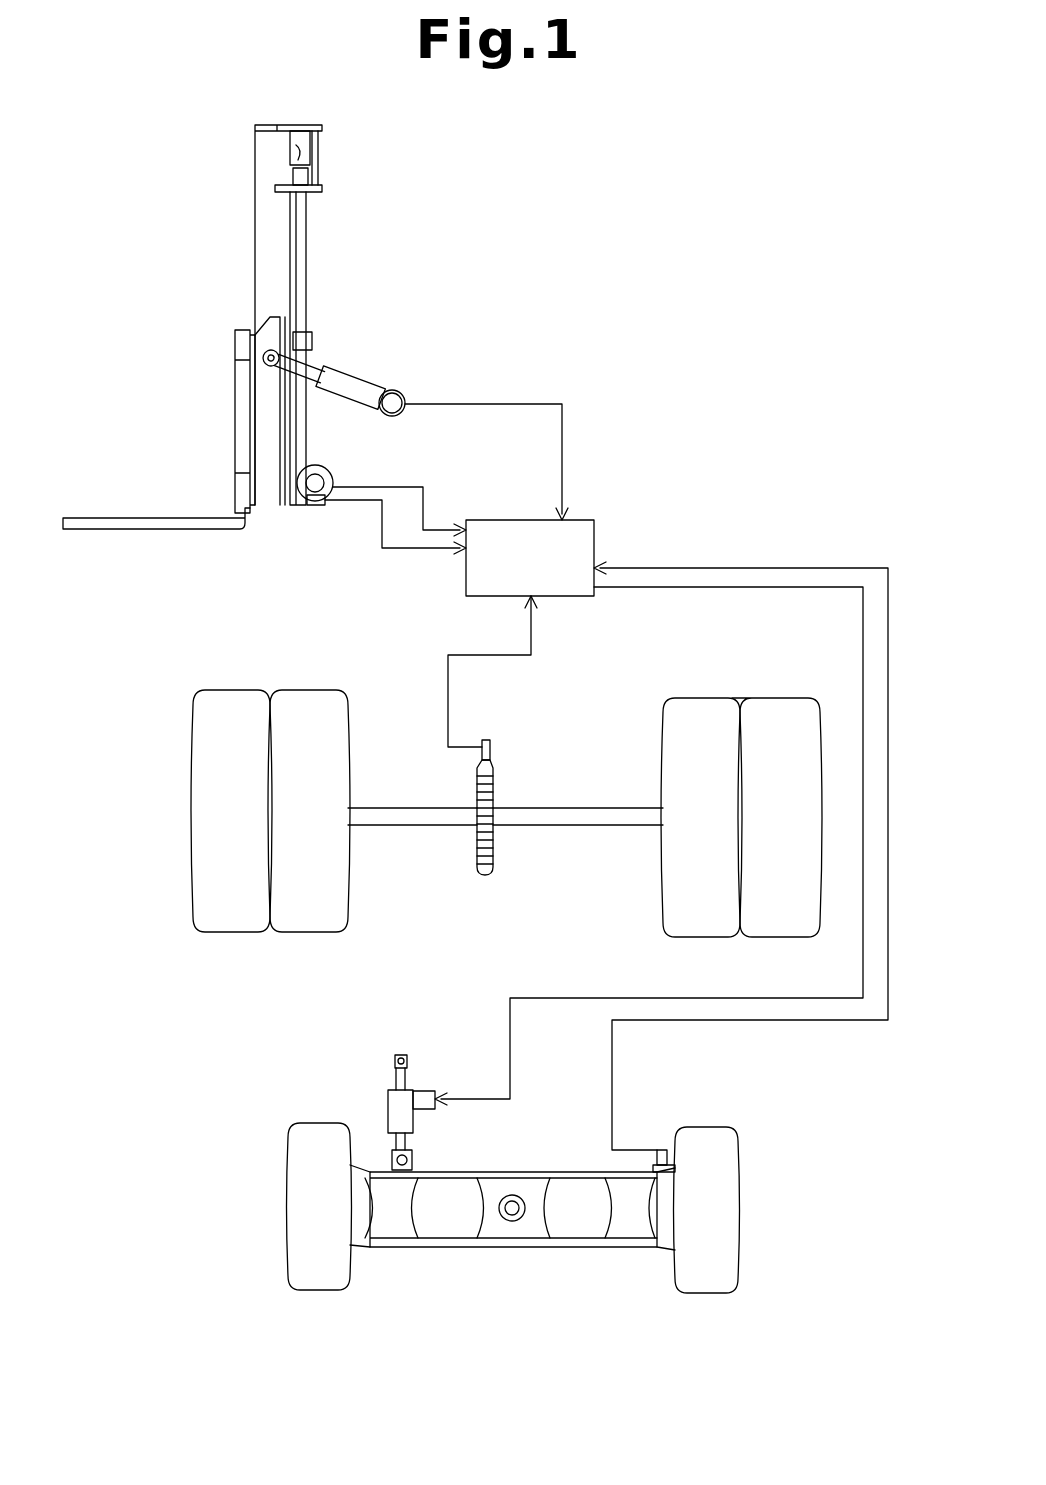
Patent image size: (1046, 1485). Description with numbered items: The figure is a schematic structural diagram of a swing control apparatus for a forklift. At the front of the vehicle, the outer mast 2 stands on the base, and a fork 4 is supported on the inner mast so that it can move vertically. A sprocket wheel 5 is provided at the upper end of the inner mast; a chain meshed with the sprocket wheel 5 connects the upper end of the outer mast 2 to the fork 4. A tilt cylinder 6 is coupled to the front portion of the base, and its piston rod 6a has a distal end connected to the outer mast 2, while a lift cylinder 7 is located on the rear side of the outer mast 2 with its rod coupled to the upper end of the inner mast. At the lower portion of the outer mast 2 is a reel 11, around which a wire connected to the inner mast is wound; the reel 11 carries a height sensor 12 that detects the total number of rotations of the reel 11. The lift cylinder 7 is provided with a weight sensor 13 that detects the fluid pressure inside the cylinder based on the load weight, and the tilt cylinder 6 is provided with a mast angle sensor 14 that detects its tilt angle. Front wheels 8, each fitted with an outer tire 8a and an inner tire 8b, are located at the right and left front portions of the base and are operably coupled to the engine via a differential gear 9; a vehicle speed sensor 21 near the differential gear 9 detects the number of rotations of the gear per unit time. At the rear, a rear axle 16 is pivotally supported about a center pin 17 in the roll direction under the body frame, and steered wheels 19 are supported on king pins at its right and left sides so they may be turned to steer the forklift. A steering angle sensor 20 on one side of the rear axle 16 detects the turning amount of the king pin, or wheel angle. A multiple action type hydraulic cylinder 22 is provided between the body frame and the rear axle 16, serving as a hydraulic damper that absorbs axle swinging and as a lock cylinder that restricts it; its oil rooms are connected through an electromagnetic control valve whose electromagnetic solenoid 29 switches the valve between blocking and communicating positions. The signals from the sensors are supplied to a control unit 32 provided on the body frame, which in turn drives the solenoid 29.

The outer mast 2 is at (255, 243).
The fork 4 is at (150, 517).
The sprocket wheel 5 is at (318, 143).
The tilt cylinder 6 is at (373, 382).
The piston rod 6a is at (320, 372).
The lift cylinder 7 is at (309, 237).
The front wheel 8 is at (506, 816).
The outer tire 8a is at (232, 933).
The inner tire 8b is at (504, 817).
The differential gear 9 is at (494, 855).
The reel 11 is at (336, 479).
The height sensor 12 is at (318, 465).
The weight sensor 13 is at (312, 506).
The mast angle sensor 14 is at (405, 396).
The rear axle 16 is at (587, 1248).
The center pin 17 is at (512, 1222).
The steered wheel 19 is at (325, 1290).
The steering angle sensor 20 is at (660, 1150).
The vehicle speed sensor 21 is at (492, 745).
The hydraulic cylinder 22 is at (414, 1118).
The electromagnetic solenoid 29 is at (427, 1089).
The control unit 32 is at (596, 528).